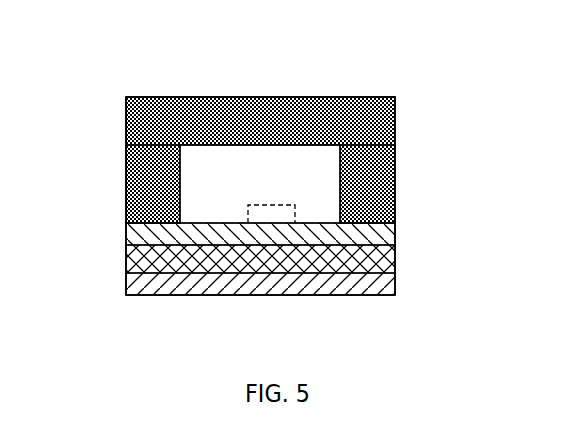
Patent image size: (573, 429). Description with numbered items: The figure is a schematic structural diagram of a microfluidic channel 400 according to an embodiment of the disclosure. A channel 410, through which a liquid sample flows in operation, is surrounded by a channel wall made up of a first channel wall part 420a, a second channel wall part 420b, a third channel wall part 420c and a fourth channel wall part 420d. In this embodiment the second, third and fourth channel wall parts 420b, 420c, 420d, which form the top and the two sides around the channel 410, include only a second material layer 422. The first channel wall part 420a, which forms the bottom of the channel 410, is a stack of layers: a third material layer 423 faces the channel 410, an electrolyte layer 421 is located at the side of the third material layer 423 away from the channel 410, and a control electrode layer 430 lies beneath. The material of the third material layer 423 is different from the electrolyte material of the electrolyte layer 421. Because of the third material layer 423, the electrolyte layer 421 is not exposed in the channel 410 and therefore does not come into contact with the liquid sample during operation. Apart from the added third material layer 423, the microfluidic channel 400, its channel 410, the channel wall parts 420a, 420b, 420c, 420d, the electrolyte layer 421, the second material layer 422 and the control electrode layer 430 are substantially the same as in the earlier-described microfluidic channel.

The microfluidic channel 400 is at (112, 85).
The channel 410 is at (318, 198).
The first channel wall part 420a is at (342, 265).
The second channel wall part 420b is at (373, 203).
The third channel wall part 420c is at (320, 100).
The fourth channel wall part 420d is at (157, 182).
The electrolyte layer 421 is at (394, 257).
The second material layer 422 is at (395, 113).
The third material layer 423 is at (218, 226).
The control electrode layer 430 is at (394, 278).